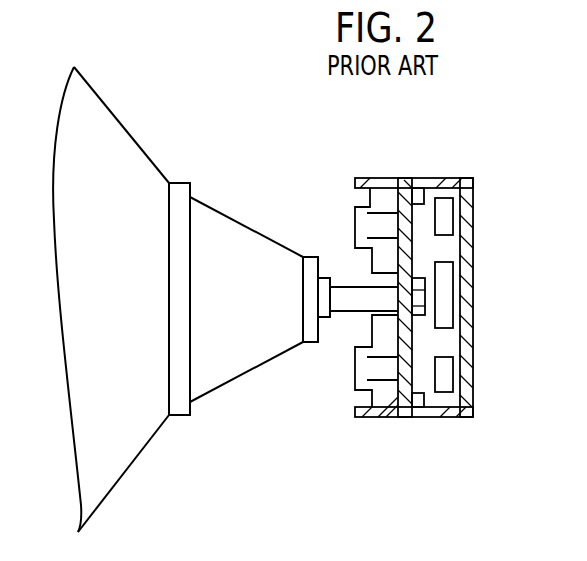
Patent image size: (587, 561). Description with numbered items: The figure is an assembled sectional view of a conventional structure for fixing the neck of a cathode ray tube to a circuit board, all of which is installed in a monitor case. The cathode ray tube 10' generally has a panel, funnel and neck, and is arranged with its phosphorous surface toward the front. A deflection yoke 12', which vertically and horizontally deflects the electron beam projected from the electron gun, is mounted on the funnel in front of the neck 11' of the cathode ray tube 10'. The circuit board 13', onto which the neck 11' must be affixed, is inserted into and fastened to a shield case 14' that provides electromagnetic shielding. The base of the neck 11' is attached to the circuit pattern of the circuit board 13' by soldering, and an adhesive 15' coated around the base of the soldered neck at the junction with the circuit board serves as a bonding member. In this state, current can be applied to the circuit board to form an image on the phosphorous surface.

The cathode ray tube 10' is at (191, 299).
The neck 11' is at (350, 256).
The deflection yoke 12' is at (160, 299).
The circuit board 13' is at (455, 297).
The shield case 14' is at (414, 274).
The adhesive 15' is at (373, 313).